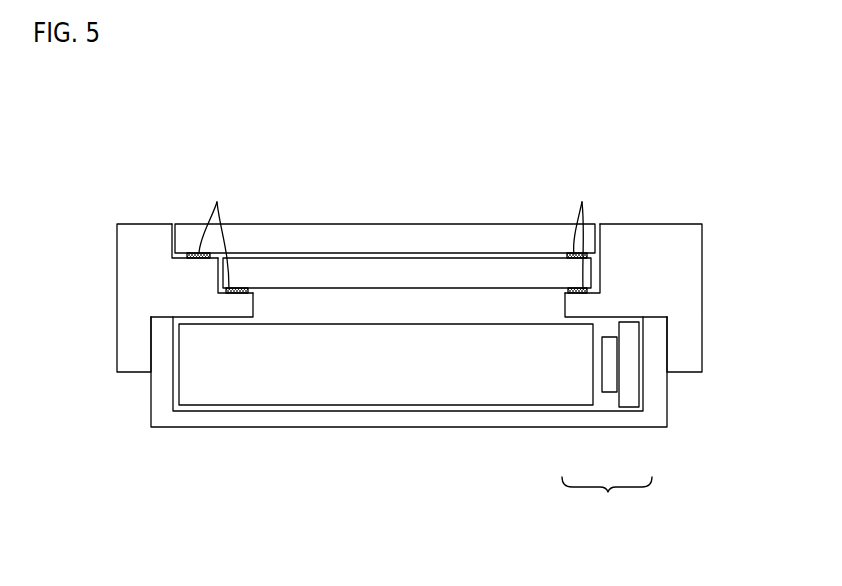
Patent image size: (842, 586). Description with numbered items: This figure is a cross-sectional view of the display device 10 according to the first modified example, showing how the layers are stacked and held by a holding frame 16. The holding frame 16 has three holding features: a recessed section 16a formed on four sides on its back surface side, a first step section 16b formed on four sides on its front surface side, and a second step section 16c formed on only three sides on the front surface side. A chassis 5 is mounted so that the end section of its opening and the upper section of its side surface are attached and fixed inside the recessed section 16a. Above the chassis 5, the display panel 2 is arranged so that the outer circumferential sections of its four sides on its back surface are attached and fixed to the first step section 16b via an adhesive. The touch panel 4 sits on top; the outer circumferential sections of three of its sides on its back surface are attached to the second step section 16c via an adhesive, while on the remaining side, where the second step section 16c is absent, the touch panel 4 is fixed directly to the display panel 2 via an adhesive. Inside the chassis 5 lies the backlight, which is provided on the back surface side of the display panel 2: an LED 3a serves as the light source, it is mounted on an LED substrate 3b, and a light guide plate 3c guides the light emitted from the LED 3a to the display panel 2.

The display device 10 is at (665, 160).
The holding frame 16 is at (127, 357).
The recessed section 16a is at (210, 317).
The first step section 16b is at (218, 293).
The second step section 16c is at (173, 258).
The display panel 2 is at (405, 273).
The touch panel 4 is at (472, 237).
The chassis 5 is at (472, 420).
The LED 3a is at (608, 380).
The LED substrate 3b is at (633, 398).
The light guide plate 3c is at (577, 397).